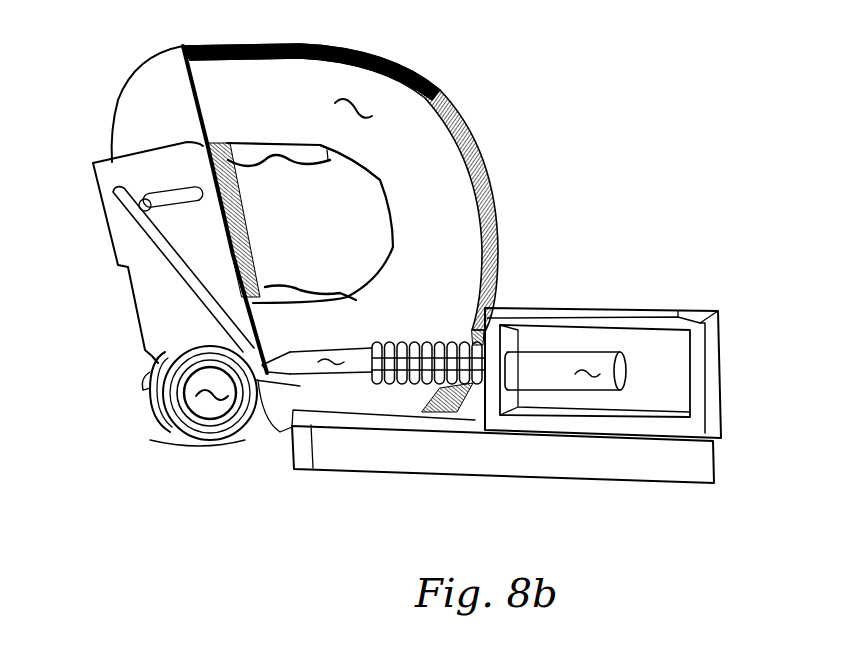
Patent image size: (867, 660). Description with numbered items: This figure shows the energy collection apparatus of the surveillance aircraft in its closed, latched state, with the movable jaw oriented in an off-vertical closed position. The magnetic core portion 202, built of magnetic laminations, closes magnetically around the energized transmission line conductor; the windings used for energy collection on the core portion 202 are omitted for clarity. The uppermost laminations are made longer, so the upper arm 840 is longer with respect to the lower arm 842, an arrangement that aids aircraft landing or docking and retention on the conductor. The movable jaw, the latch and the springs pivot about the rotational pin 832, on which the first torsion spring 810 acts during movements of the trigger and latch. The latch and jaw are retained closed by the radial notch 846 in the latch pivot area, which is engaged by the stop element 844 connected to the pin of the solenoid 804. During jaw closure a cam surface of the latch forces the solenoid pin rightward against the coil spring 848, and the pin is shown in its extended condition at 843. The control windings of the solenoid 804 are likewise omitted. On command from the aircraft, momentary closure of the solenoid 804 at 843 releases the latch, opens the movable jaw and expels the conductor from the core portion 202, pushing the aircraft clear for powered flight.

The magnetic core portion 202 is at (358, 110).
The solenoid 804 is at (722, 316).
The first torsion spring 810 is at (183, 353).
The rotational pin 832 is at (197, 400).
The upper arm 840 is at (277, 167).
The lower arm 842 is at (303, 283).
The extended condition of solenoid pin 843 is at (587, 385).
The stop element 844 is at (320, 366).
The radial notch 846 is at (253, 420).
The coil spring 848 is at (457, 410).